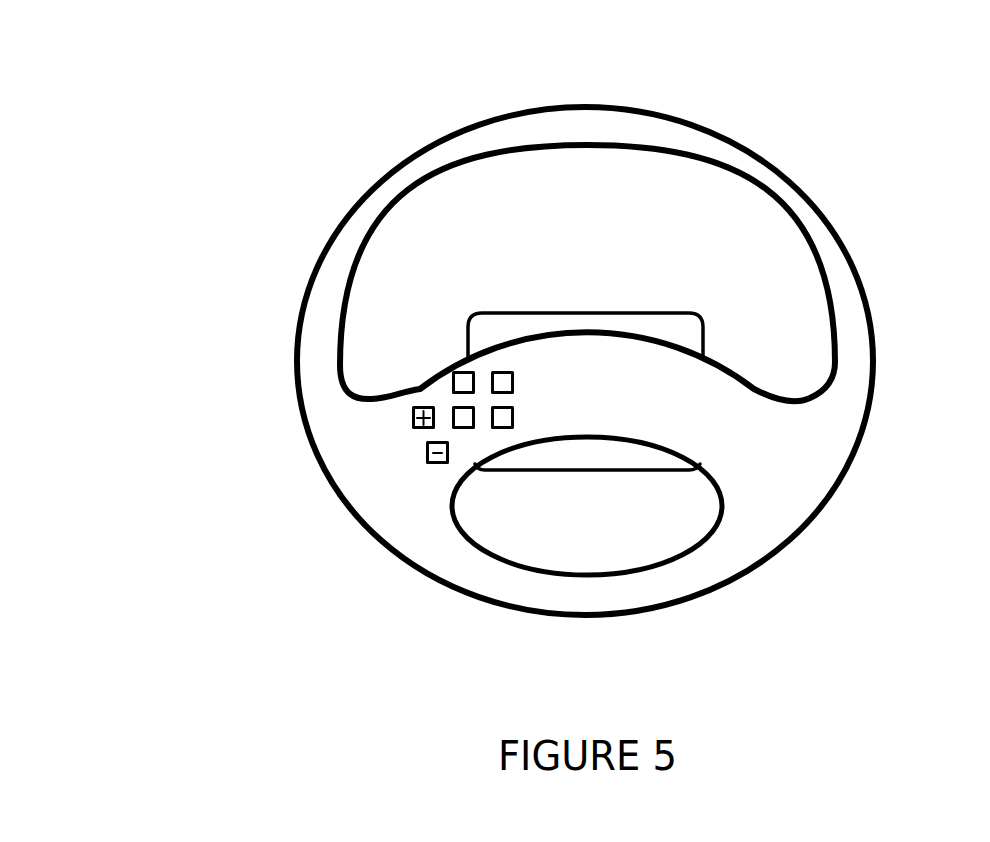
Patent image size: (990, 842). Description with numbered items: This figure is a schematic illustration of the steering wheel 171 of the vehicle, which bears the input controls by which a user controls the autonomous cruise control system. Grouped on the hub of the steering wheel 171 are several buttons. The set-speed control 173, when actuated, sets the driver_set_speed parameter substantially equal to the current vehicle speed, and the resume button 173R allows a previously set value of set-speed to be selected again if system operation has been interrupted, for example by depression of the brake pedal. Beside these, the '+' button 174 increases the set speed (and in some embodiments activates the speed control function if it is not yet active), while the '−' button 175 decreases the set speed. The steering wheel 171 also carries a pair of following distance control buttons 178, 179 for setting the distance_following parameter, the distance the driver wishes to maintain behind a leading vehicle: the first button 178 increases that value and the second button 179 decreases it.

The steering wheel 171 is at (847, 310).
The set-speed control 173 is at (453, 417).
The resume button 173R is at (457, 377).
The '+' button 174 is at (413, 415).
The '−' button 175 is at (427, 453).
The following distance control button 178 is at (503, 372).
The following distance control button 179 is at (503, 428).